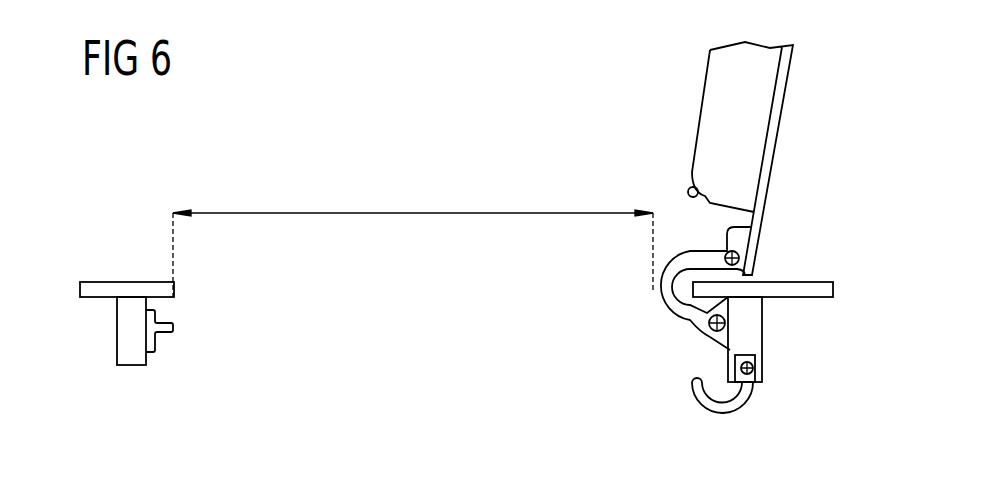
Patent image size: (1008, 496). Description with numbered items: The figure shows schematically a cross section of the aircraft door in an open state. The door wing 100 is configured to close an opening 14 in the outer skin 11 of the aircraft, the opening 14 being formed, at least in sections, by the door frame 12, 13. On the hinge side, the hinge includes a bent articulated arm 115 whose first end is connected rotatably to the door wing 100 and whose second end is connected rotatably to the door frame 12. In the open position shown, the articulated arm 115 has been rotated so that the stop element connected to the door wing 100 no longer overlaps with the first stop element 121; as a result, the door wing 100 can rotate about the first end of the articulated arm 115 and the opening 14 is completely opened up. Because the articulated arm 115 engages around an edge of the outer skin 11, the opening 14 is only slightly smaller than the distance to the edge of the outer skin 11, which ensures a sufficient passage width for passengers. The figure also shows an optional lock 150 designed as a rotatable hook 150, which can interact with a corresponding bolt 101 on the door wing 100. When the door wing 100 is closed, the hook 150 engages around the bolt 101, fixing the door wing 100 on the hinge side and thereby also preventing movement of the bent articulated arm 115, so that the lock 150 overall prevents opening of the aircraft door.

The outer skin 11 is at (106, 281).
The door frame 12 is at (753, 313).
The door frame 13 is at (132, 357).
The opening 14 is at (440, 337).
The door wing 100 is at (772, 150).
The bolt 101 is at (670, 178).
The bent articulated arm 115 is at (658, 292).
The first stop element 121 is at (162, 336).
The lock 150 is at (718, 408).